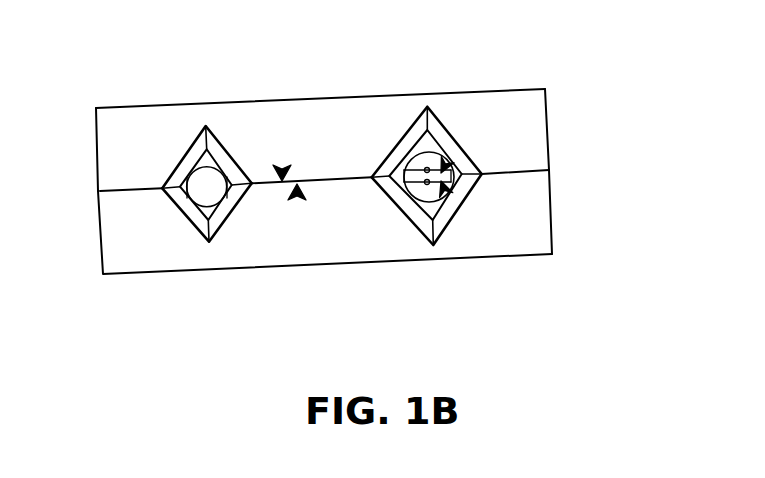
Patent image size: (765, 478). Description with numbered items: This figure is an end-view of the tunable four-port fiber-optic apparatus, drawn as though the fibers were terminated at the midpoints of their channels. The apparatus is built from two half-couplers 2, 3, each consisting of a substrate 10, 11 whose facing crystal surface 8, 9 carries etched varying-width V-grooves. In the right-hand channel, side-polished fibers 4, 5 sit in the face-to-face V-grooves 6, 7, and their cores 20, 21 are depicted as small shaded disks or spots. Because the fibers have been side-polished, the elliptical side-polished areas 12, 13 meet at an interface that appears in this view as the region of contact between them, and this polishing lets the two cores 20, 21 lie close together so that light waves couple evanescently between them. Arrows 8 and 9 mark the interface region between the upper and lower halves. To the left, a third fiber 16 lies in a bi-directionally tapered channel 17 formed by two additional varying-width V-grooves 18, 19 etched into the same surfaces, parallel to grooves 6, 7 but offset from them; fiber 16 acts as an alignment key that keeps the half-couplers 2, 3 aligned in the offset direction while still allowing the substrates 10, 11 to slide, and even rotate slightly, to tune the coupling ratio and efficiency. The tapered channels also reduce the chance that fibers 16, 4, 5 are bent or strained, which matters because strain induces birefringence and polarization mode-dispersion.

The half-coupler 2 is at (572, 138).
The half-coupler 3 is at (573, 217).
The side-polished fiber 4 is at (424, 153).
The side-polished fiber 5 is at (436, 203).
The varying-width V-groove 6 is at (397, 143).
The varying-width V-groove 7 is at (401, 210).
The crystal surface 8 is at (282, 176).
The crystal surface 9 is at (297, 190).
The substrate 10 is at (549, 155).
The substrate 11 is at (552, 238).
The side-polished area 12 is at (447, 160).
The side-polished area 13 is at (447, 196).
The third fiber 16 is at (206, 187).
The bi-directionally tapered channel 17 is at (210, 217).
The varying-width V-groove 18 is at (172, 177).
The varying-width V-groove 19 is at (192, 205).
The core 20 is at (424, 170).
The core 21 is at (425, 182).